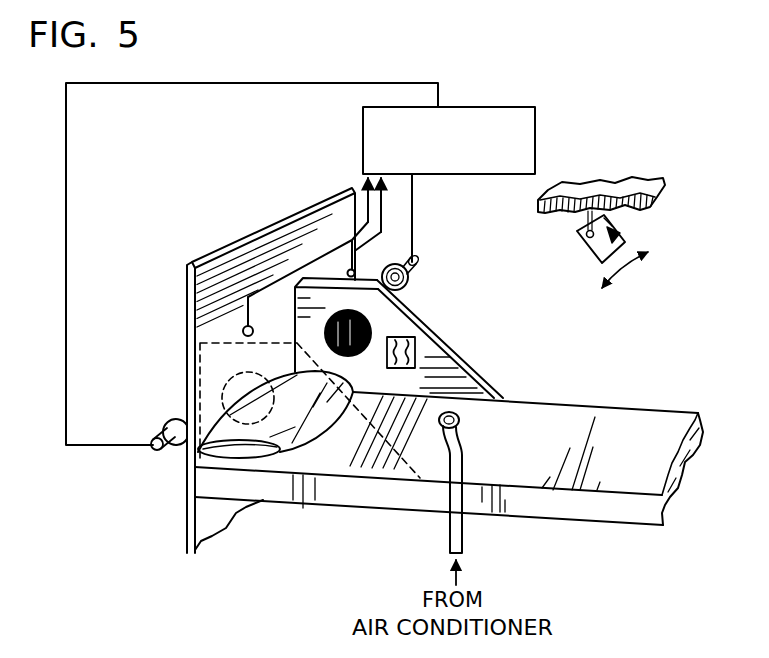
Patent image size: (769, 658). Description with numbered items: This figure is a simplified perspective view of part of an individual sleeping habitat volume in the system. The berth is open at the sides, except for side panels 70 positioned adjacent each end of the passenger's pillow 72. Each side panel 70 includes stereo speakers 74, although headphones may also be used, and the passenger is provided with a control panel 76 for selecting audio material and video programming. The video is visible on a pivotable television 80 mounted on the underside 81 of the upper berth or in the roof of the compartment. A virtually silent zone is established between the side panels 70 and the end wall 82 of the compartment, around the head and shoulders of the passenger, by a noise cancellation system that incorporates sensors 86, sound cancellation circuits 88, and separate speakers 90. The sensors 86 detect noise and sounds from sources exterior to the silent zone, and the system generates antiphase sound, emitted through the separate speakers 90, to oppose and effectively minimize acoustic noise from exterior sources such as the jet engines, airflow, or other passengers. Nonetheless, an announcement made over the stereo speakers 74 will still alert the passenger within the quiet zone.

The side panel 70 is at (483, 378).
The pillow 72 is at (260, 463).
The stereo speakers 74 is at (372, 325).
The control panel 76 is at (416, 340).
The pivotable television 80 is at (587, 248).
The underside of the upper berth 81 is at (665, 180).
The end wall 82 is at (267, 227).
The sensors 86 is at (355, 271).
The sound cancellation circuits 88 is at (503, 107).
The separate speakers 90 is at (414, 267).